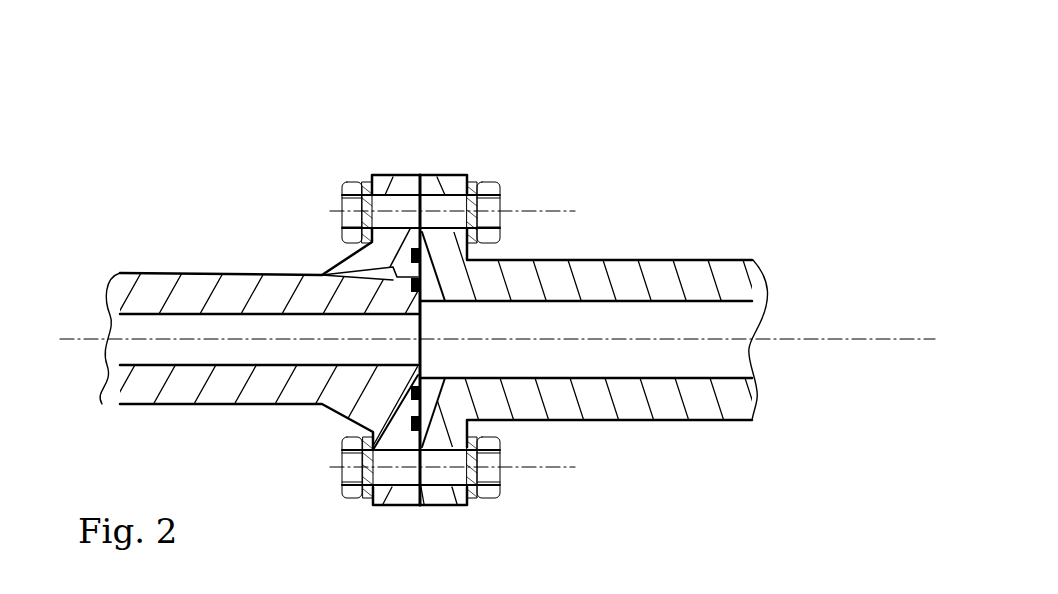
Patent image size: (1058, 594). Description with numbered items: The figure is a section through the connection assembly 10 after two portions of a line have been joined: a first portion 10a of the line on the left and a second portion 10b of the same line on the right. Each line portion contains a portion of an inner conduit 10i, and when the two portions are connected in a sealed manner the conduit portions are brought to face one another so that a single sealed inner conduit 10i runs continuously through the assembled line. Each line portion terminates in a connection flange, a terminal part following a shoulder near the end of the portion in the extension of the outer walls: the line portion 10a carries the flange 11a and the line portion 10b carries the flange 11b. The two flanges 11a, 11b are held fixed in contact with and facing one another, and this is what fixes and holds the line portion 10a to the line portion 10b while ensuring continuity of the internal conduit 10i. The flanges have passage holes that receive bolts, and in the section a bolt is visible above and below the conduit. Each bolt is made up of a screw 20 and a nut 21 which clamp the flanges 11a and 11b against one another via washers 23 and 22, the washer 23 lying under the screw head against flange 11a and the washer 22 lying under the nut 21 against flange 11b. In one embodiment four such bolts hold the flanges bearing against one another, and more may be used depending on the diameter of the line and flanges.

The connection assembly 10 is at (425, 266).
The first portion of a line 10a is at (158, 266).
The second portion of a line 10b is at (662, 253).
The inner conduit 10i is at (127, 327).
The connection flange 11a is at (385, 175).
The connection flange 11b is at (427, 187).
The screw 20 is at (347, 205).
The nut 21 is at (485, 205).
The washer 22 is at (472, 185).
The washer 23 is at (365, 180).